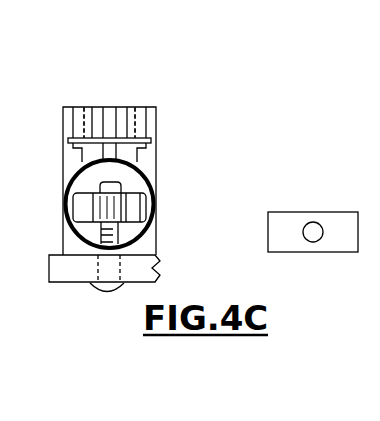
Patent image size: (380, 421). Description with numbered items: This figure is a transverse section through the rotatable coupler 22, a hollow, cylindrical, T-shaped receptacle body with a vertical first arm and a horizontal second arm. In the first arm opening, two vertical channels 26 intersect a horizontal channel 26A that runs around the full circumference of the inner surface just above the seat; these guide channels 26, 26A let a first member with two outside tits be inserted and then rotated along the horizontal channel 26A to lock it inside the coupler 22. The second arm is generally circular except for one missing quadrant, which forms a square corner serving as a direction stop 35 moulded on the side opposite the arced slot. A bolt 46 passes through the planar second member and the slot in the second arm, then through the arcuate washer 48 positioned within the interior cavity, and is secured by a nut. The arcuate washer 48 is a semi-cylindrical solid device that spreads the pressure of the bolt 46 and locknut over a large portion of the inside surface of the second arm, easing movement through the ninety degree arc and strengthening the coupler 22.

The rotatable coupler 22 is at (157, 124).
The horizontal channel 26A is at (90, 107).
The vertical channels 26 is at (128, 107).
The arcuate washer 48 is at (275, 235).
The direction stop 35 is at (145, 243).
The bolt 46 is at (112, 287).